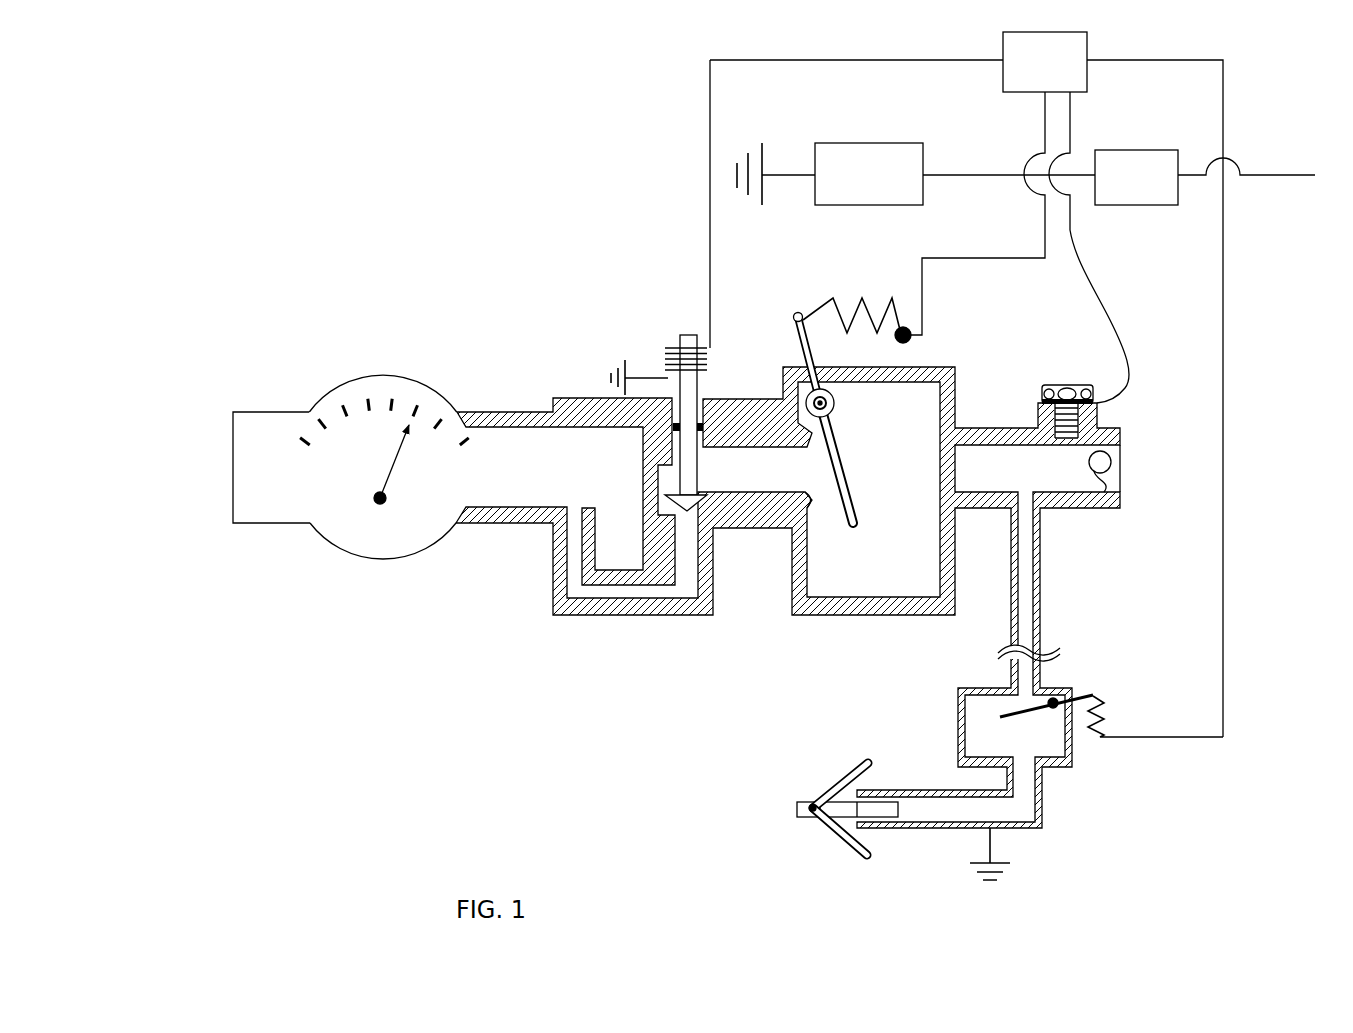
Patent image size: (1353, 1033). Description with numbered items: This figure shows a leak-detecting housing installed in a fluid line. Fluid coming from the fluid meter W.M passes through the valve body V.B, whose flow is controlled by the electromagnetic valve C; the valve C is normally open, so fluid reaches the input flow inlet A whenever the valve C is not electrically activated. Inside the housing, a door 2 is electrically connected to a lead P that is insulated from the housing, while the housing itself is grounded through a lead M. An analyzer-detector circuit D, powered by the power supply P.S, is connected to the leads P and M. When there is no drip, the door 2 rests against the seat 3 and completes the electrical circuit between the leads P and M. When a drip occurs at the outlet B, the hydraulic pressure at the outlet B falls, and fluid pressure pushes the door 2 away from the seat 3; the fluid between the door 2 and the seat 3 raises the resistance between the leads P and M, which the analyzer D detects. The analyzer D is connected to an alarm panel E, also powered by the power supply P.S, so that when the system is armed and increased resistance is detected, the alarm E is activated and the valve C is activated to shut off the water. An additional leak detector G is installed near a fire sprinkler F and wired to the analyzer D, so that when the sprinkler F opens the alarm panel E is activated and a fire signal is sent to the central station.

The fluid meter W.M is at (353, 560).
The valve body V.B is at (633, 615).
The input flow inlet A is at (716, 450).
The outlet B is at (1133, 468).
The electromagnetic valve C is at (694, 512).
The door 2 is at (853, 523).
The seat 3 is at (813, 508).
The lead P is at (932, 327).
The lead M is at (1134, 373).
The analyzer-detector circuit D is at (966, 384).
The power supply P.S is at (916, 174).
The alarm panel E is at (1205, 177).
The leak detector G is at (1065, 768).
The fire sprinkler F is at (840, 771).